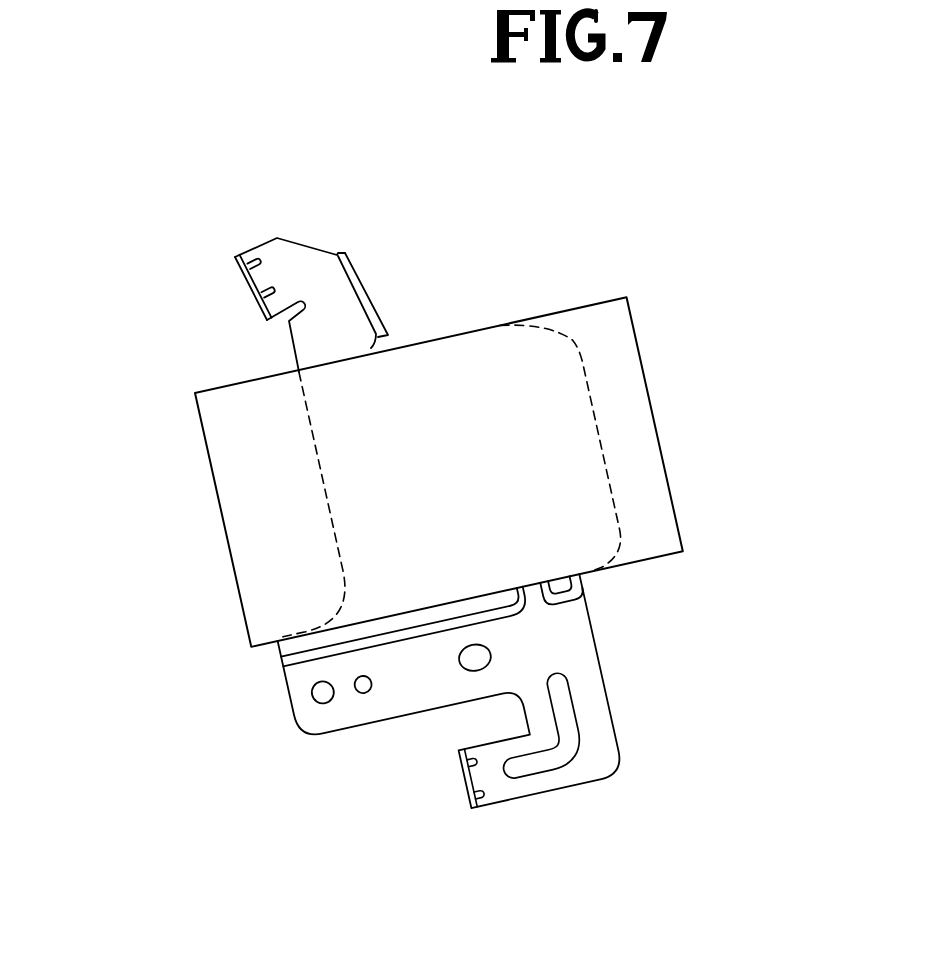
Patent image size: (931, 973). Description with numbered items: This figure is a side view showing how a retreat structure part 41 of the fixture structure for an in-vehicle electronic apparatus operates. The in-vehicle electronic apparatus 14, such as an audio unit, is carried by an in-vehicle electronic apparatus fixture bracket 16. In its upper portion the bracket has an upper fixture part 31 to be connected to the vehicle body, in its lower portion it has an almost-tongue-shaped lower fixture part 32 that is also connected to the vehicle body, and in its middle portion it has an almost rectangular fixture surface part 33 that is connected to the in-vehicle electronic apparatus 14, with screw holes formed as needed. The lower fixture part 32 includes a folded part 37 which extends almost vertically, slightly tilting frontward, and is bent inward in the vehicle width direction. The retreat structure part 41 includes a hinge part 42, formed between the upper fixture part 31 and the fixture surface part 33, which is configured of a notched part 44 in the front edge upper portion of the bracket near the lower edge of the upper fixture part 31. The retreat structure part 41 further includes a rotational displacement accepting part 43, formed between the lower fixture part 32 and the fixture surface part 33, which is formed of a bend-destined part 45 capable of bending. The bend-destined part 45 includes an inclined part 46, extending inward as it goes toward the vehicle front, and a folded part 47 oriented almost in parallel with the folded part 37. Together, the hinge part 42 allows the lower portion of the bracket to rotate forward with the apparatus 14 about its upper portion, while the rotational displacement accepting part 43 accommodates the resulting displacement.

The in-vehicle electronic apparatus 14 is at (665, 427).
The in-vehicle electronic apparatus fixture bracket 16 is at (213, 292).
The upper fixture part 31 is at (235, 257).
The lower fixture part 32 is at (475, 808).
The fixture surface part 33 is at (592, 388).
The folded part 37 is at (532, 790).
The retreat structure part 41 is at (277, 327).
The hinge part 42 is at (286, 336).
The rotational displacement accepting part 43 is at (527, 845).
The notched part 44 is at (286, 336).
The bend-destined part 45 is at (527, 845).
The inclined part 46 is at (502, 806).
The folded part 47 is at (477, 810).